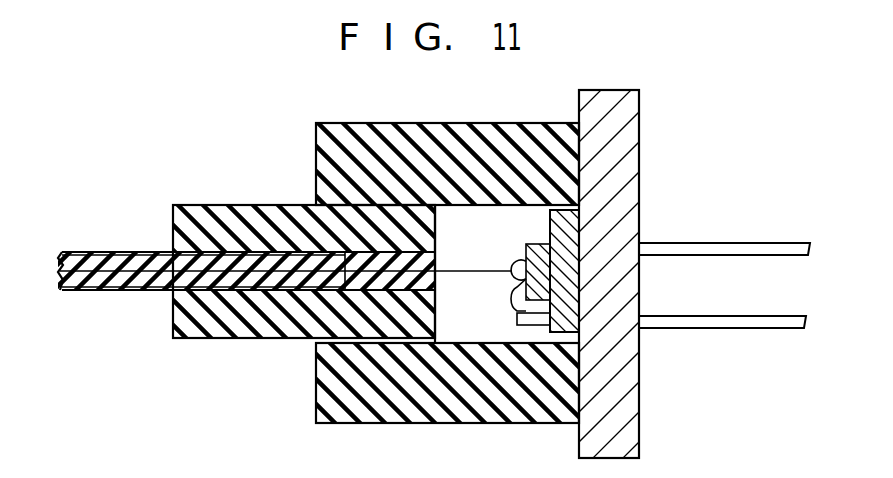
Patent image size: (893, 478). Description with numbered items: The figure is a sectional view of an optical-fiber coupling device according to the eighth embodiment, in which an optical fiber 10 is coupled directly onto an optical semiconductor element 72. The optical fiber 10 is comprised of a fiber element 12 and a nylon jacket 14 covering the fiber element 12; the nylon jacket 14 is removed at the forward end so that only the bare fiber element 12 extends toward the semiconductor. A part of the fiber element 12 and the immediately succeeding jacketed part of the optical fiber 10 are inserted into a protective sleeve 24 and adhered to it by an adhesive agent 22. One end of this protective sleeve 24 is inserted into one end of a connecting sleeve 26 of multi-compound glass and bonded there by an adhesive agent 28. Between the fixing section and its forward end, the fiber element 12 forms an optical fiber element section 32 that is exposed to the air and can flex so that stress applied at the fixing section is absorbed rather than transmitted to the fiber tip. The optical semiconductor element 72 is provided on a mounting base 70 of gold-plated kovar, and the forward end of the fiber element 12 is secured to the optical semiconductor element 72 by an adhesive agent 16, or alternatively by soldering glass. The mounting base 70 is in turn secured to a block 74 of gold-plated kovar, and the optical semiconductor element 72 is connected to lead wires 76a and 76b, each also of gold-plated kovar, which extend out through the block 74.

The optical fiber 10 is at (112, 242).
The fiber element 12 is at (151, 291).
The nylon jacket 14 is at (101, 293).
The adhesive agent 16 is at (513, 283).
The adhesive agent 22 is at (436, 262).
The protective sleeve 24 is at (199, 210).
The connecting sleeve 26 is at (465, 423).
The adhesive agent 28 is at (335, 345).
The optical fiber element section 32 is at (470, 270).
The mounting base 70 is at (574, 237).
The optical semiconductor element 72 is at (538, 245).
The block 74 is at (633, 119).
The lead wire 76a is at (752, 246).
The lead wire 76b is at (748, 327).